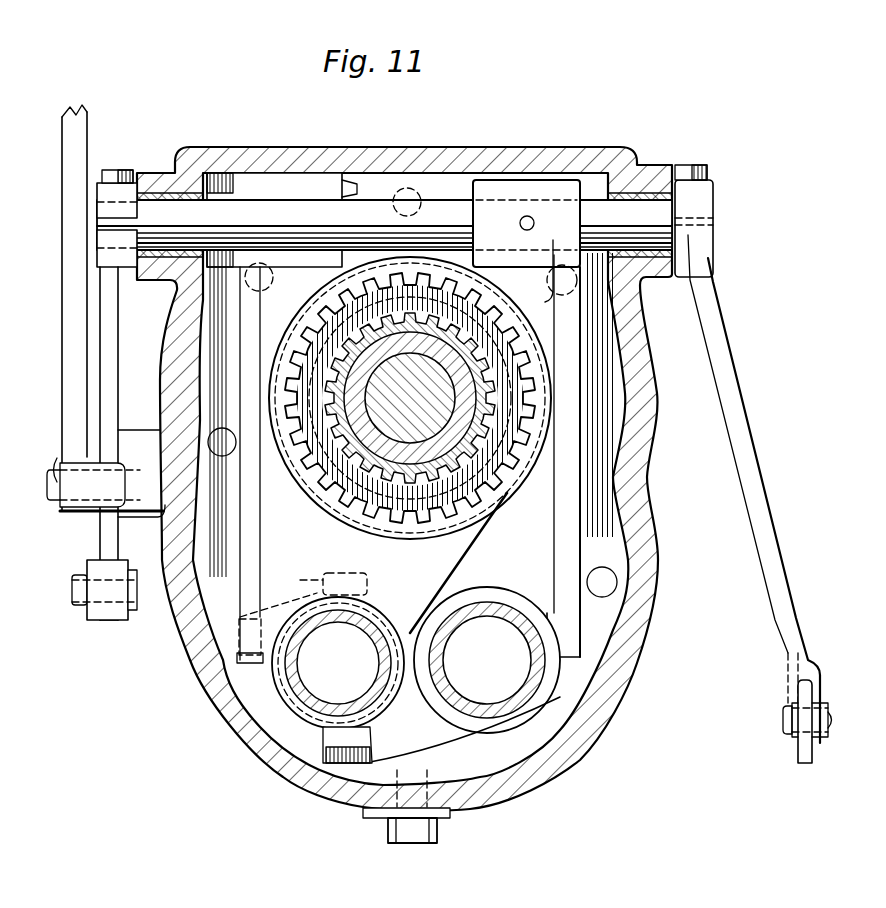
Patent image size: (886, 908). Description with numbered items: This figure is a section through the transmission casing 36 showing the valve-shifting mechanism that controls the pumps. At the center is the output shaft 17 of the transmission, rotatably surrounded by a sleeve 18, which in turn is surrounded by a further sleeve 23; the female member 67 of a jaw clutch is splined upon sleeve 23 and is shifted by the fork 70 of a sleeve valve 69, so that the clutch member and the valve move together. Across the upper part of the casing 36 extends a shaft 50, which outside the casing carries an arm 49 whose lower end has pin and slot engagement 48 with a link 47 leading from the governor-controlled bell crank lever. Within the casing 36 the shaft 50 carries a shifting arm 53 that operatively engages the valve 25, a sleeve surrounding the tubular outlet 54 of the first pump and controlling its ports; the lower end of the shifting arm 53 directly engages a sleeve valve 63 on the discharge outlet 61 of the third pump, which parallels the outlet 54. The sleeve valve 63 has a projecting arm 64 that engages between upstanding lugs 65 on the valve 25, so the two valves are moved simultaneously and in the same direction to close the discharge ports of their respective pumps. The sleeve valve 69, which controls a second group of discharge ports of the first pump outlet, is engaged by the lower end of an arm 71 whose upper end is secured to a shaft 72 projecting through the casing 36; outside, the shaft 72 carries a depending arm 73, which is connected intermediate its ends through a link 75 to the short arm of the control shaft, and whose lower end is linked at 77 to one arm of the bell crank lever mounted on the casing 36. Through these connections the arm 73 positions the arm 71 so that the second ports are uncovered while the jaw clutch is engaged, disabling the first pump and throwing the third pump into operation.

The output shaft 17 is at (455, 416).
The sleeve 18 is at (352, 418).
The sleeve 23 is at (395, 455).
The valve 25 is at (383, 604).
The casing 36 is at (240, 148).
The link 47 is at (803, 750).
The pin and slot engagement 48 is at (787, 720).
The arm 49 is at (743, 437).
The shaft 50 is at (600, 213).
The shifting arm 53 is at (568, 467).
The tubular outlet 54 is at (305, 680).
The discharge outlet 61 is at (523, 673).
The sleeve valve 63 is at (505, 612).
The projecting arm 64 is at (467, 593).
The upstanding lugs 65 is at (375, 588).
The female member of jaw clutch 67 is at (500, 328).
The sleeve valve 69 is at (347, 720).
The fork 70 is at (495, 497).
The arm 71 is at (248, 513).
The shaft 72 is at (350, 199).
The depending arm 73 is at (115, 385).
The link 75 is at (75, 162).
The link connection 77 is at (117, 597).